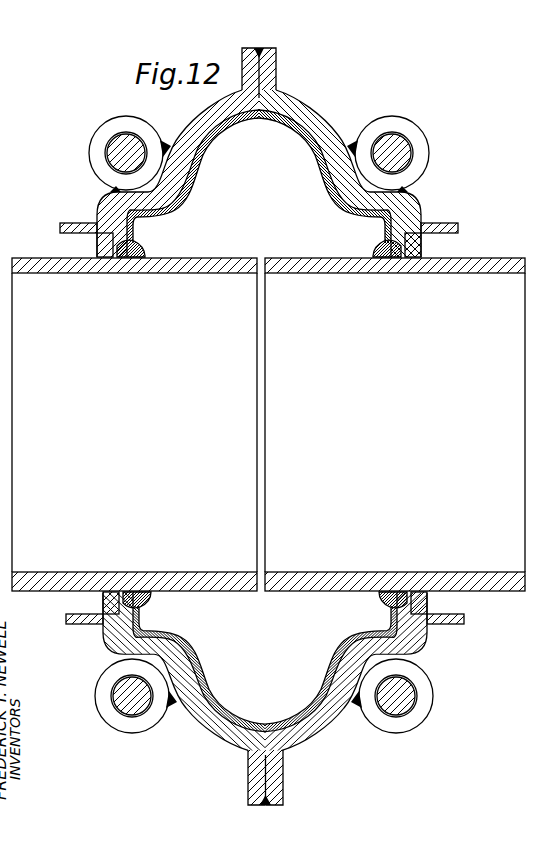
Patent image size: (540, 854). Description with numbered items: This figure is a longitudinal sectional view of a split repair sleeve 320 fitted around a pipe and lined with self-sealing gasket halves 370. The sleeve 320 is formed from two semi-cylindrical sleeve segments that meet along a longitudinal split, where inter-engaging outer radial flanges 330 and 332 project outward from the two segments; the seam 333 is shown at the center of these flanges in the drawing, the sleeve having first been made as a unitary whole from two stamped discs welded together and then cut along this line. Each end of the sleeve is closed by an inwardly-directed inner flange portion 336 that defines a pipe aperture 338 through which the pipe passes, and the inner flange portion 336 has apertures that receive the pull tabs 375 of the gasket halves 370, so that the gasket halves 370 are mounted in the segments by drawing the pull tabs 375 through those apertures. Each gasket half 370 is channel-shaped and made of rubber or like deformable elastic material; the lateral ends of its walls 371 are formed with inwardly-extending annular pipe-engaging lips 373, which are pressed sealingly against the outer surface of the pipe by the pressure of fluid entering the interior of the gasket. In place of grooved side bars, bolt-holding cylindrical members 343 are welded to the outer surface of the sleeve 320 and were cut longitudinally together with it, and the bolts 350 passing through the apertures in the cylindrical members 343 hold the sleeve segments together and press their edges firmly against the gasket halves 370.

The sleeve 320 is at (294, 96).
The gasket half 370 is at (319, 128).
The walls of the gasket half 371 is at (286, 122).
The outer radial flange 330 is at (242, 62).
The outer radial flange 332 is at (277, 58).
The seam joint 333 is at (257, 50).
The pull tab 375 is at (78, 223).
The inner flange portion 336 is at (99, 259).
The pipe aperture 338 is at (119, 262).
The pipe-engaging lip 373 is at (382, 254).
The bolt 350 is at (118, 152).
The bolt-holding cylindrical member 343 is at (428, 707).